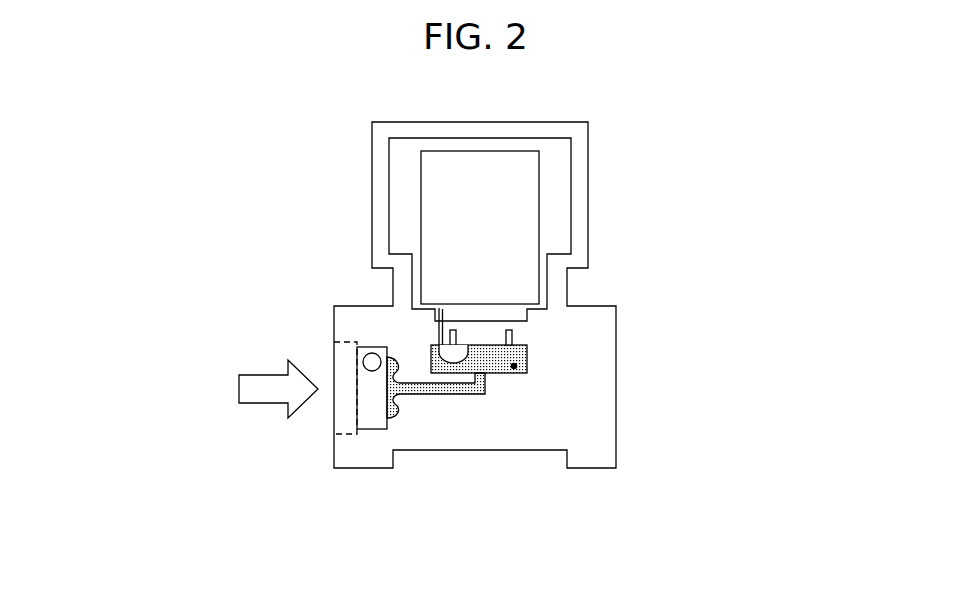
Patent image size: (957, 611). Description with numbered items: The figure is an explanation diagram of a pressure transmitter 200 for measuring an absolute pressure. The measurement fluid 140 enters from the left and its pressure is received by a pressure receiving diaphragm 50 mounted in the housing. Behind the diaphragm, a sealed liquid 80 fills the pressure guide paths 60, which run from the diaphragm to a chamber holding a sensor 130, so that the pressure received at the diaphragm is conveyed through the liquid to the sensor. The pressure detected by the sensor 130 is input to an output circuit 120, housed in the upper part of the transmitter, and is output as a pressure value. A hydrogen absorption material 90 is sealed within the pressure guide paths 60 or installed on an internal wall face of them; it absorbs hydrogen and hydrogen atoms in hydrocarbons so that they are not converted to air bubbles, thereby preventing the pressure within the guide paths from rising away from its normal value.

The pressure receiving diaphragm 50 is at (388, 392).
The pressure guide paths 60 is at (411, 413).
The sealed liquid 80 is at (518, 352).
The hydrogen absorption material 90 is at (516, 366).
The output circuit 120 is at (480, 227).
The sensor 130 is at (500, 341).
The measurement fluid 140 is at (165, 391).
The pressure transmitter 200 is at (313, 497).